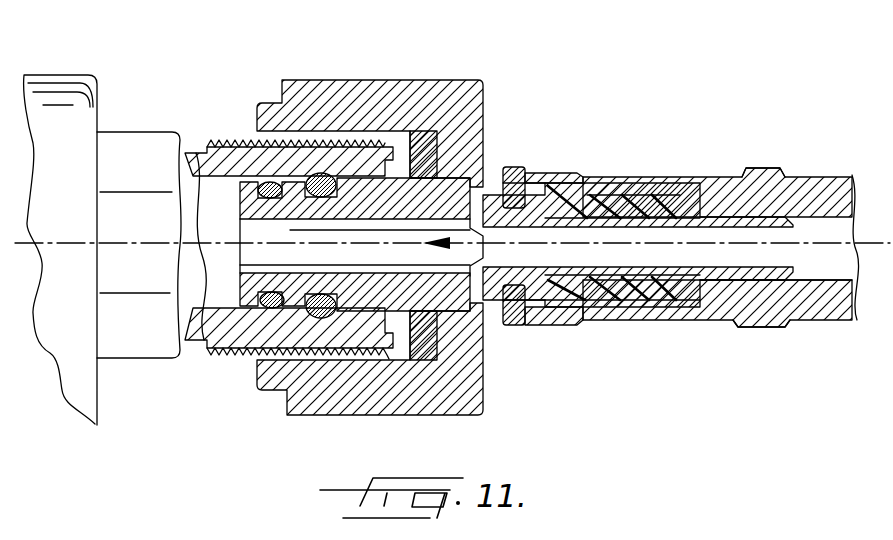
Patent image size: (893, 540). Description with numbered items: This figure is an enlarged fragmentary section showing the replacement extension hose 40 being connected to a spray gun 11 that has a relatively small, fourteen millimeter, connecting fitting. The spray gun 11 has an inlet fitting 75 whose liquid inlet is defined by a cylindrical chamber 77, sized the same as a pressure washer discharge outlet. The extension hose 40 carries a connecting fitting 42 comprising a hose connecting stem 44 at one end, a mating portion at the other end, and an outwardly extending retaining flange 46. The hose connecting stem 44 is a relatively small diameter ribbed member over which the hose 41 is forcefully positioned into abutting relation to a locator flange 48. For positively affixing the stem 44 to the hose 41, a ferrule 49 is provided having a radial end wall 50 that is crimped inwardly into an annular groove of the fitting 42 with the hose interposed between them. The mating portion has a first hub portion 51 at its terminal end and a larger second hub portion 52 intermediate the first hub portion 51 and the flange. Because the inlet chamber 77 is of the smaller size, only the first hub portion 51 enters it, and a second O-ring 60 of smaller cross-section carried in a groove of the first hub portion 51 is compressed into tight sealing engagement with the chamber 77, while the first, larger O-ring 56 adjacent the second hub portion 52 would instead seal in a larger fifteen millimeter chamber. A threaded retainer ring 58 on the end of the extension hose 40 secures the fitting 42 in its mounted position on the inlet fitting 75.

The spray gun 11 is at (63, 78).
The extension hose 40 is at (824, 168).
The hose 41 is at (833, 310).
The connecting fitting 42 is at (461, 184).
The hose connecting stem 44 is at (637, 273).
The retaining flange 46 is at (398, 333).
The locator flange 48 is at (533, 297).
The ferrule 49 is at (722, 315).
The radial end wall 50 is at (508, 192).
The first hub portion 51 is at (284, 306).
The second hub portion 52 is at (338, 315).
The first O-ring 56 is at (320, 173).
The threaded retainer ring 58 is at (399, 93).
The second O-ring 60 is at (270, 182).
The inlet fitting 75 is at (215, 147).
The cylindrical chamber 77 is at (222, 290).